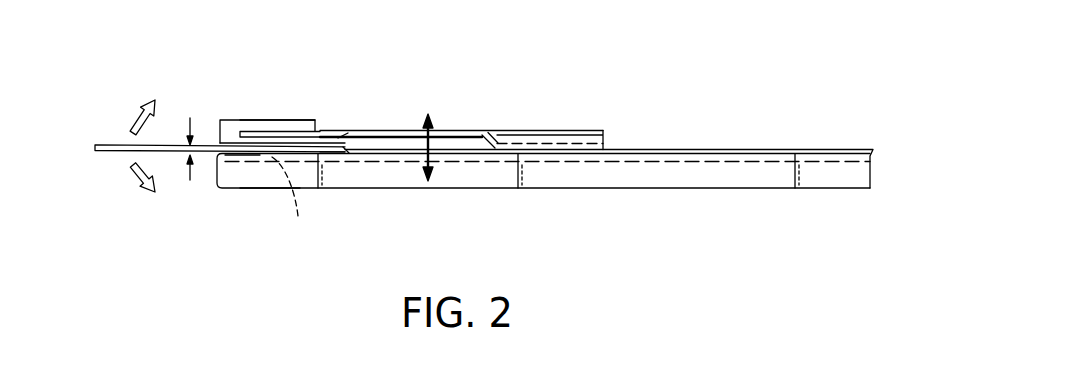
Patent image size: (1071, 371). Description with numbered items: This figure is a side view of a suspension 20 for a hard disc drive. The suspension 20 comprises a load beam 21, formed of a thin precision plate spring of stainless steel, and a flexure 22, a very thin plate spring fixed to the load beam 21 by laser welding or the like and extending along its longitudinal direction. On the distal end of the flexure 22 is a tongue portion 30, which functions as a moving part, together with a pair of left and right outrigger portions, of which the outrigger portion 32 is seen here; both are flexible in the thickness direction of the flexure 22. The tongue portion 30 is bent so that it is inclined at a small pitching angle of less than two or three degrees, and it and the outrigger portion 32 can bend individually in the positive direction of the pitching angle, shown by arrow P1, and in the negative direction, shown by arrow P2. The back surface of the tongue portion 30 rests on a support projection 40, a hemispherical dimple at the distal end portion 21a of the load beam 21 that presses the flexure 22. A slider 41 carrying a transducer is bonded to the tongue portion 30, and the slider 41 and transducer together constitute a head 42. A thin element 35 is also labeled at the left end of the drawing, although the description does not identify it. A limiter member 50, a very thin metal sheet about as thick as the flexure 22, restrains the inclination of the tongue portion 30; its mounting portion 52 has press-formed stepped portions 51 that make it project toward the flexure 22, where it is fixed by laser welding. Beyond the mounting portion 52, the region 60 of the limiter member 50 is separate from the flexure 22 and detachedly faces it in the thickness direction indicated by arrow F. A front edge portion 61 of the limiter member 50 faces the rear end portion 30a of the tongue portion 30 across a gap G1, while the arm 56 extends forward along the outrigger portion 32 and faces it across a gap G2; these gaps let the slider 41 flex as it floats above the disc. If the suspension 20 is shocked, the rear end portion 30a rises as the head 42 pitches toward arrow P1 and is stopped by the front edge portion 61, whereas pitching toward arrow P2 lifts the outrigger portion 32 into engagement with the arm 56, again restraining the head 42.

The suspension 20 is at (788, 127).
The load beam 21 is at (713, 182).
The distal end portion of the load beam 21a is at (264, 185).
The flexure 22 is at (657, 150).
The tongue portion 30 is at (232, 146).
The rear end portion of the tongue portion 30a is at (351, 150).
The outrigger portion 32 is at (238, 155).
The inserted sheet 35 is at (108, 144).
The support projection 40 is at (291, 201).
The slider 41 is at (220, 137).
The head 42 is at (307, 108).
The limiter member 50 is at (460, 128).
The stepped portion 51 is at (498, 140).
The mounting portion 52 is at (567, 144).
The arm 56 is at (253, 131).
The region outside the mounting portion 60 is at (407, 130).
The front edge portion 61 is at (333, 130).
The gap G1 is at (350, 137).
The gap G2 is at (285, 142).
The thickness direction arrow F is at (433, 141).
The positive pitching direction arrow P1 is at (149, 191).
The negative pitching direction arrow P2 is at (148, 107).